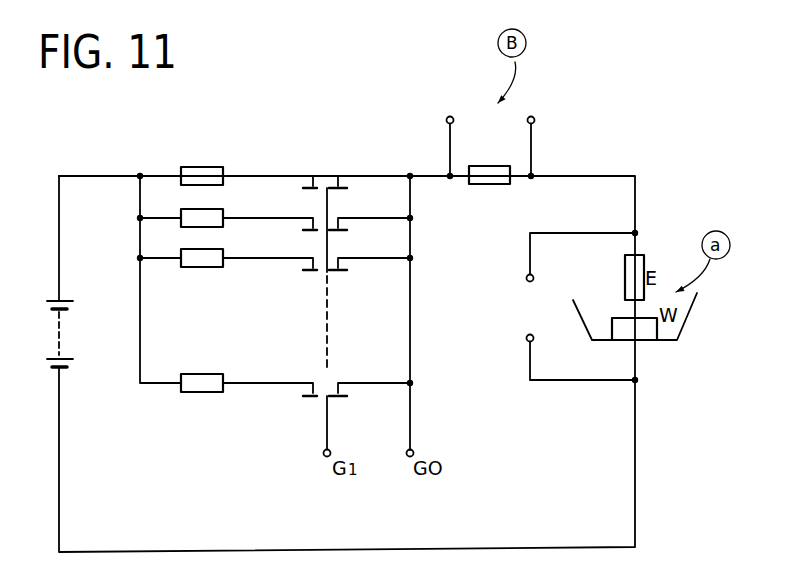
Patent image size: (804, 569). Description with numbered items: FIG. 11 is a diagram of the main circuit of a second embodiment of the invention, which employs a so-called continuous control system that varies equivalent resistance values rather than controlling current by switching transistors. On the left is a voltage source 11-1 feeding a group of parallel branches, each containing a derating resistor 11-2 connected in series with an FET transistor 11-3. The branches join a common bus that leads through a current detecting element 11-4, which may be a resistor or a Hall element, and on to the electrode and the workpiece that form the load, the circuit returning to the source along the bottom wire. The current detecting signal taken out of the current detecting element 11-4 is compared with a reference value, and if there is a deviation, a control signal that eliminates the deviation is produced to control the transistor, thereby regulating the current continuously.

The voltage source Ev 11-1 is at (79, 313).
The derating resistor 11-2 is at (215, 160).
The FET transistor 11-3 is at (342, 158).
The current detecting element 11-4 is at (490, 136).